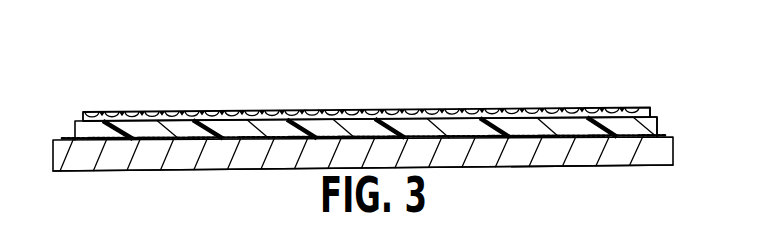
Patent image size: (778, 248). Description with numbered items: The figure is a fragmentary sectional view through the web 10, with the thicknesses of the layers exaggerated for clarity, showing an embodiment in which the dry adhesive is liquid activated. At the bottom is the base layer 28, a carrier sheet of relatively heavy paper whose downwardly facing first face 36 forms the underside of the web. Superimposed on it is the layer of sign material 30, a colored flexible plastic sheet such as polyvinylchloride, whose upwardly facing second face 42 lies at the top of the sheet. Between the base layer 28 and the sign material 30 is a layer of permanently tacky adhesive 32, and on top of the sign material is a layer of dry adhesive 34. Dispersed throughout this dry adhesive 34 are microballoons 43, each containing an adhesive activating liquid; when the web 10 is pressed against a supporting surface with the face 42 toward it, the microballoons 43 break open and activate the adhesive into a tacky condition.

The web 10 is at (403, 80).
The base layer 28 is at (388, 149).
The layer of sign material 30 is at (656, 124).
The layer of permanently tacky adhesive 32 is at (74, 137).
The layer of dry adhesive 34 is at (593, 107).
The first face 36 is at (507, 168).
The second face 42 is at (152, 112).
The microballoons 43 is at (276, 109).